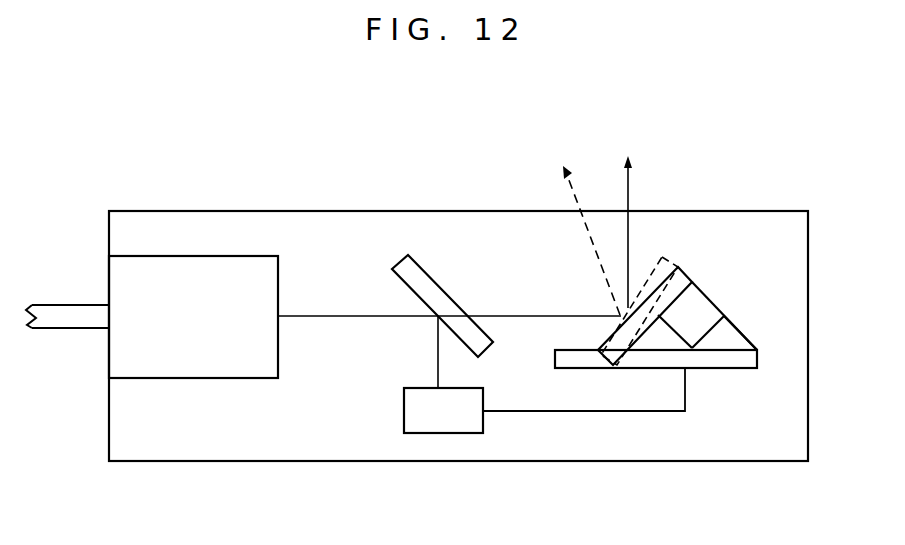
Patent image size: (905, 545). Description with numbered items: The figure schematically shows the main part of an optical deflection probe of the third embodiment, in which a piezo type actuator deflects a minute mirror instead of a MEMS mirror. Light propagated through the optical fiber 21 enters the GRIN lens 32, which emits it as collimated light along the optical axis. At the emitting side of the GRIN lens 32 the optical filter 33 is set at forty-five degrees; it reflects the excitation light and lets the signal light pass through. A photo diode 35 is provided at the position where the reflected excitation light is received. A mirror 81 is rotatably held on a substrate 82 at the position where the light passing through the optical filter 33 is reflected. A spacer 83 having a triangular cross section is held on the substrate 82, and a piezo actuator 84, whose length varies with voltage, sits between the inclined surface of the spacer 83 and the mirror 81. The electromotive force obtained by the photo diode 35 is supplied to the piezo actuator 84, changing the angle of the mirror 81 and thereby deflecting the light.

The optical fiber 21 is at (63, 320).
The GRIN lens 32 is at (180, 254).
The optical filter 33 is at (429, 268).
The photo diode 35 is at (452, 435).
The mirror 81 is at (688, 277).
The substrate 82 is at (717, 355).
The spacer 83 is at (730, 333).
The piezo actuator 84 is at (712, 303).